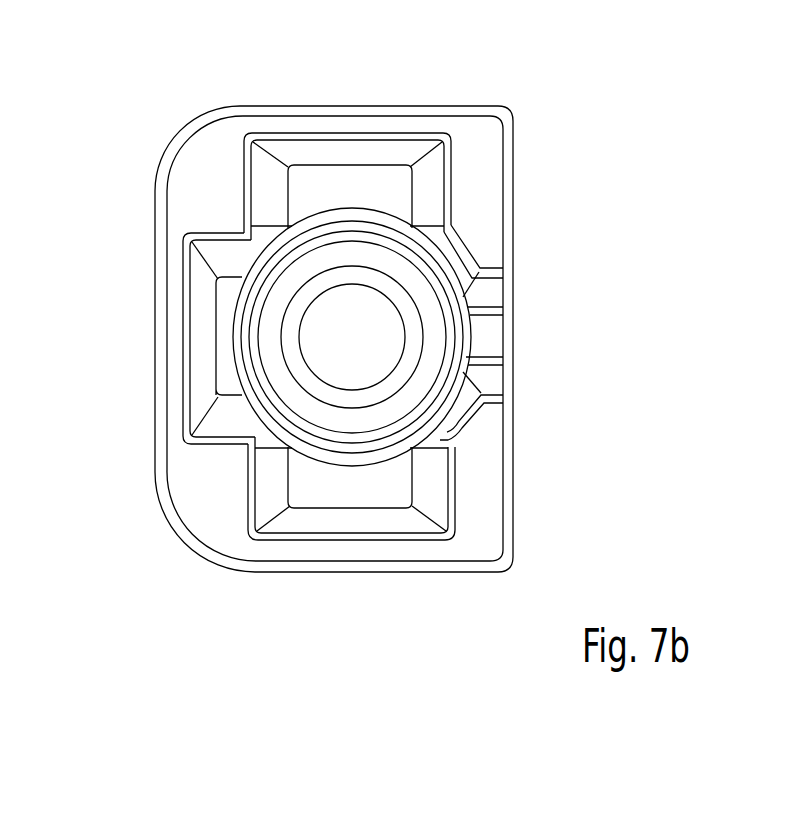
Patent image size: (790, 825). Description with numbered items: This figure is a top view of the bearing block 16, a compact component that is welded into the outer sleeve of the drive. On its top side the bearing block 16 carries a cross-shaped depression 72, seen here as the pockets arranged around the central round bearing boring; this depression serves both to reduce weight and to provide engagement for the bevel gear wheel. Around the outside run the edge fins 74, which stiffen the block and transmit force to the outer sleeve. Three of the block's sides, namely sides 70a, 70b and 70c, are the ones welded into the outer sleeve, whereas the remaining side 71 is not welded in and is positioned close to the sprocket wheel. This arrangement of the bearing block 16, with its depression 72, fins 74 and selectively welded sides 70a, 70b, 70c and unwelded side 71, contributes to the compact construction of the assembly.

The bearing block 16 is at (537, 161).
The side 70a is at (360, 100).
The side 70b is at (148, 398).
The side 70c is at (314, 582).
The side 71 is at (522, 356).
The cross-shaped depression 72 is at (402, 191).
The edge fins 74 is at (202, 182).